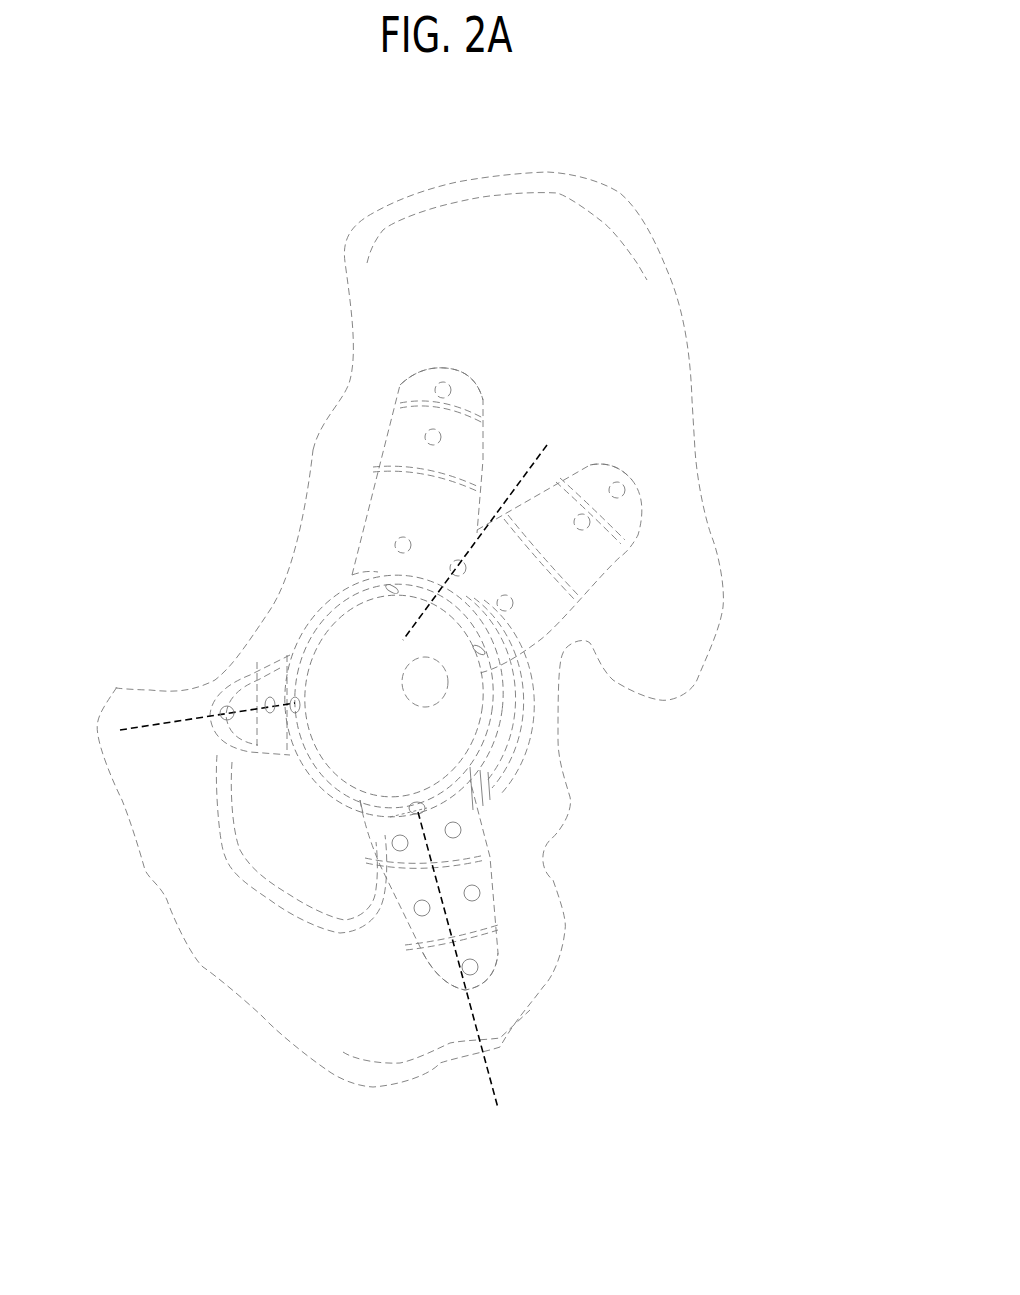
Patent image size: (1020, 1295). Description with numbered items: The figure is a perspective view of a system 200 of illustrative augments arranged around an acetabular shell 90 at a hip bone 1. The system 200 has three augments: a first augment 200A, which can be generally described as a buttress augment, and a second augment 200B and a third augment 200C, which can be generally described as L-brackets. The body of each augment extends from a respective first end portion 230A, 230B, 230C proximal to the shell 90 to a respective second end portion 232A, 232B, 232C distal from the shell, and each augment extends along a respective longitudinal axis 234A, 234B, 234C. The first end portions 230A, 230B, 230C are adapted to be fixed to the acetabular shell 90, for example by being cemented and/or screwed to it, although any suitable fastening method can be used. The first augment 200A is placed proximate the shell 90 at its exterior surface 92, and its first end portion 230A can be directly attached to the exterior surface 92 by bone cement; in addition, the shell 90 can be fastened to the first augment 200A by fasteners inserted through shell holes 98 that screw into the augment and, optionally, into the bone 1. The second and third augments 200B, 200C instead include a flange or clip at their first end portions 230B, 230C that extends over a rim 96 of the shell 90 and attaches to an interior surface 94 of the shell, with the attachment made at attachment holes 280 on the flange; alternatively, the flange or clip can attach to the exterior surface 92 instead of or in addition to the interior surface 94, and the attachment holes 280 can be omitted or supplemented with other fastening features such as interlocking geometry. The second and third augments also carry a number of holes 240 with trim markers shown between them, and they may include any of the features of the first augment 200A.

The hip bone 1 is at (518, 228).
The system 200 is at (281, 246).
The acetabular shell 90 is at (310, 602).
The exterior surface 92 is at (302, 778).
The interior surface 94 is at (348, 783).
The rim 96 is at (480, 793).
The shell holes 98 is at (480, 653).
The first augment 200A is at (362, 493).
The second augment 200B is at (509, 953).
The third augment 200C is at (241, 660).
The first end portion 230A is at (364, 565).
The first end portion 230B is at (396, 812).
The first end portion 230C is at (300, 728).
The second end portion 232A is at (597, 452).
The second end portion 232B is at (490, 982).
The second end portion 232C is at (207, 727).
The longitudinal axis 234A is at (527, 473).
The longitudinal axis 234B is at (523, 1082).
The longitudinal axis 234C is at (148, 727).
The fastener holes 240 is at (270, 703).
The attachment holes 280 is at (293, 700).